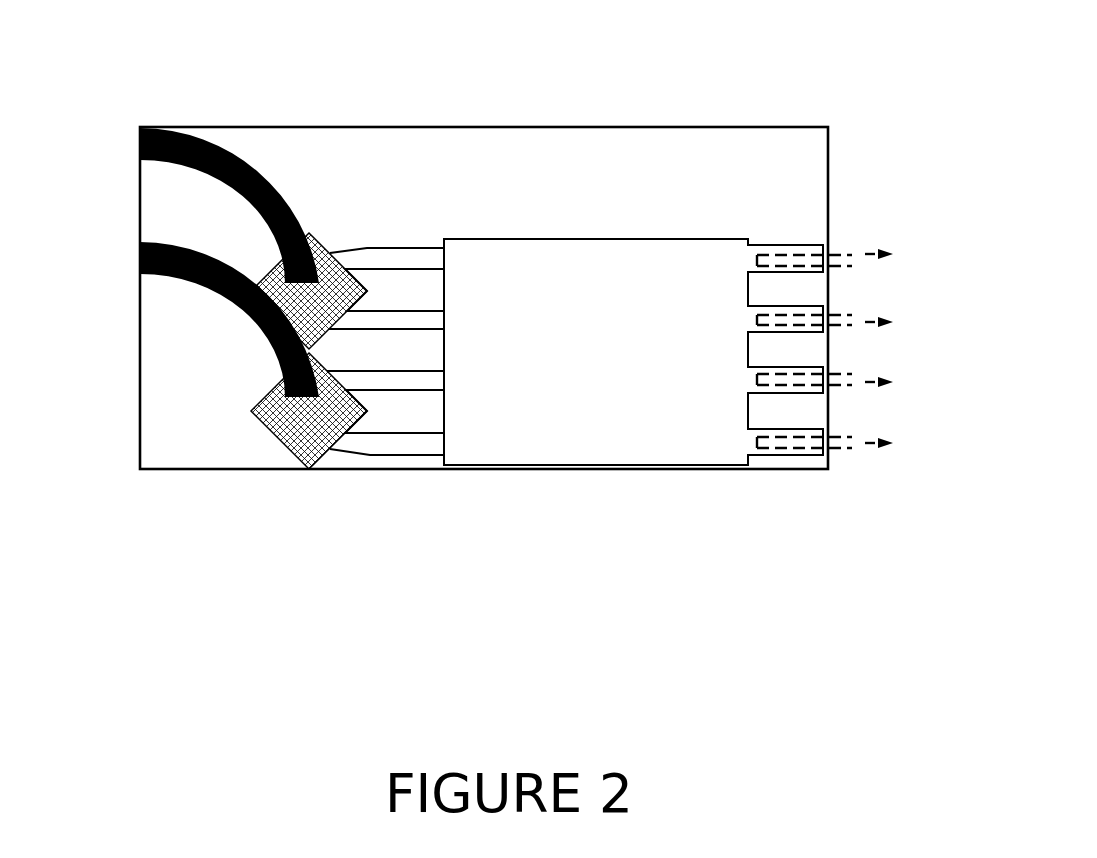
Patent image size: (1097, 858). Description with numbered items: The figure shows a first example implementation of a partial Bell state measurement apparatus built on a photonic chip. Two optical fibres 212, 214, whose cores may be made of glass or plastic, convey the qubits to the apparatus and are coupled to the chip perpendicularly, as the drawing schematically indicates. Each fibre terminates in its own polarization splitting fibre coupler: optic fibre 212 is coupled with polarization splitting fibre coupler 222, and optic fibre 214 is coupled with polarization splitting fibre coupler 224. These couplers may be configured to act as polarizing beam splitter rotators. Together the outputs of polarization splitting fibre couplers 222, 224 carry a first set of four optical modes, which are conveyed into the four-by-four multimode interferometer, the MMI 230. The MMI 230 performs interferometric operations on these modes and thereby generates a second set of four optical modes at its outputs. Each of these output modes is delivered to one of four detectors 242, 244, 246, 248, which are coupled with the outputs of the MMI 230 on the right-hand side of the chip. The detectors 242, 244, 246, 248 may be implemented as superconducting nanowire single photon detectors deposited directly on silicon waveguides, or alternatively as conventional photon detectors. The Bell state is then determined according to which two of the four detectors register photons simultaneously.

The optical fibre 212 is at (160, 128).
The optical fibre 214 is at (158, 242).
The polarization splitting fibre coupler 222 is at (328, 285).
The polarization splitting fibre coupler 224 is at (280, 422).
The 4×4 MMI 230 is at (615, 357).
The detector 242 is at (801, 246).
The detector 244 is at (782, 307).
The detector 246 is at (777, 368).
The detector 248 is at (775, 430).